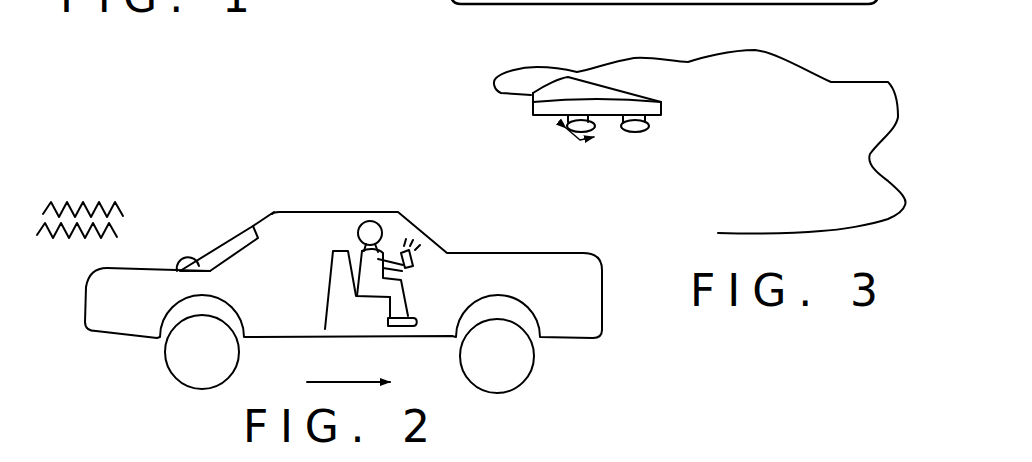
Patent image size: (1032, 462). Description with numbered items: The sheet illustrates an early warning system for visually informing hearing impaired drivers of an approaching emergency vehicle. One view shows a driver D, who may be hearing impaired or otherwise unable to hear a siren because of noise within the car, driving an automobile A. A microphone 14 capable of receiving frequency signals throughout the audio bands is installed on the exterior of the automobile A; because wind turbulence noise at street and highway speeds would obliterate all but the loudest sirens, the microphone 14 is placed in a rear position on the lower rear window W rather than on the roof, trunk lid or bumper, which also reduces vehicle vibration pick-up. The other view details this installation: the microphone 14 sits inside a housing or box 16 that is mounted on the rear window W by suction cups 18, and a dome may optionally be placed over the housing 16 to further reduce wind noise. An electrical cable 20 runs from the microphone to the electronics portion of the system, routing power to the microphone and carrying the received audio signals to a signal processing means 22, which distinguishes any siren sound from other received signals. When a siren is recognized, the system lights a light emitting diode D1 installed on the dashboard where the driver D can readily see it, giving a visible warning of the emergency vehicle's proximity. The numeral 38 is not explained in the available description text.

In FIG. 3, the microphone 14 is at (590, 118).
In FIG. 2, the housing 16 is at (189, 240).
In FIG. 3, the housing 16 is at (658, 102).
In FIG. 3, the suction cups 18 is at (626, 130).
In FIG. 3, the electrical cable 20 is at (825, 228).
In FIG. 3, the signal processing means 22 is at (442, 26).
In FIG. 1, the display unit 38 is at (335, 0).
In FIG. 2, the automobile A is at (535, 244).
In FIG. 2, the driver D is at (368, 210).
In FIG. 2, the light emitting diode D1 is at (413, 250).
In FIG. 2, the rear window W is at (236, 224).